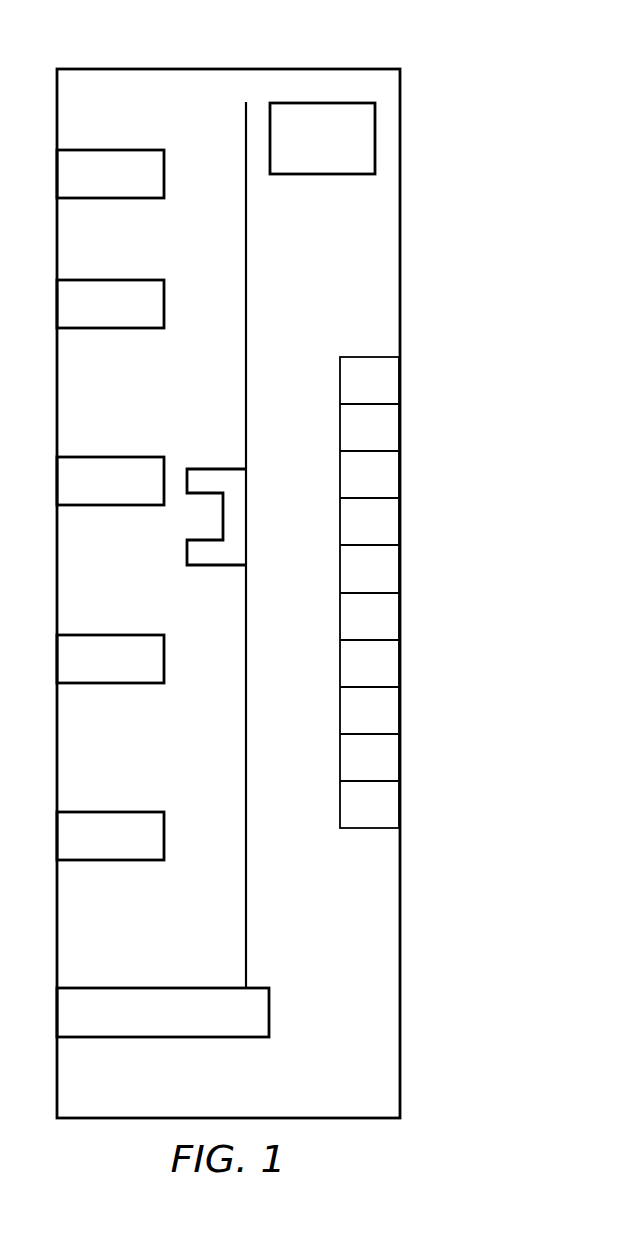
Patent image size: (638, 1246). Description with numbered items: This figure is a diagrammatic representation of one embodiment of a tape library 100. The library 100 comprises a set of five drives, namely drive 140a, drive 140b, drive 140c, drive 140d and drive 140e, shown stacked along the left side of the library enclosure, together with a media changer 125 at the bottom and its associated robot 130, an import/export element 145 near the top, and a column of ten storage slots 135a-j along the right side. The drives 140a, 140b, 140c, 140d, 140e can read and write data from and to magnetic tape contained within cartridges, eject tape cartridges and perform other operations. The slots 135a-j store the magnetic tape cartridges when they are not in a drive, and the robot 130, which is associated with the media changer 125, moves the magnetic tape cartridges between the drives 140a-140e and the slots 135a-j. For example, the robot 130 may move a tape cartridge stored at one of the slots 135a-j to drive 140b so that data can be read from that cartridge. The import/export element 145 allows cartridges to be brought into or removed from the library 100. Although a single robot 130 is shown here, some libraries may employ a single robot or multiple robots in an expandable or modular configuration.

The library 100 is at (311, 58).
The media changer 125 is at (163, 1038).
The robot 130 is at (213, 469).
The slots 135a-j is at (418, 351).
The drive 140a is at (108, 150).
The drive 140b is at (108, 280).
The drive 140c is at (108, 457).
The drive 140d is at (110, 683).
The drive 140e is at (110, 860).
The import/export element 145 is at (322, 175).